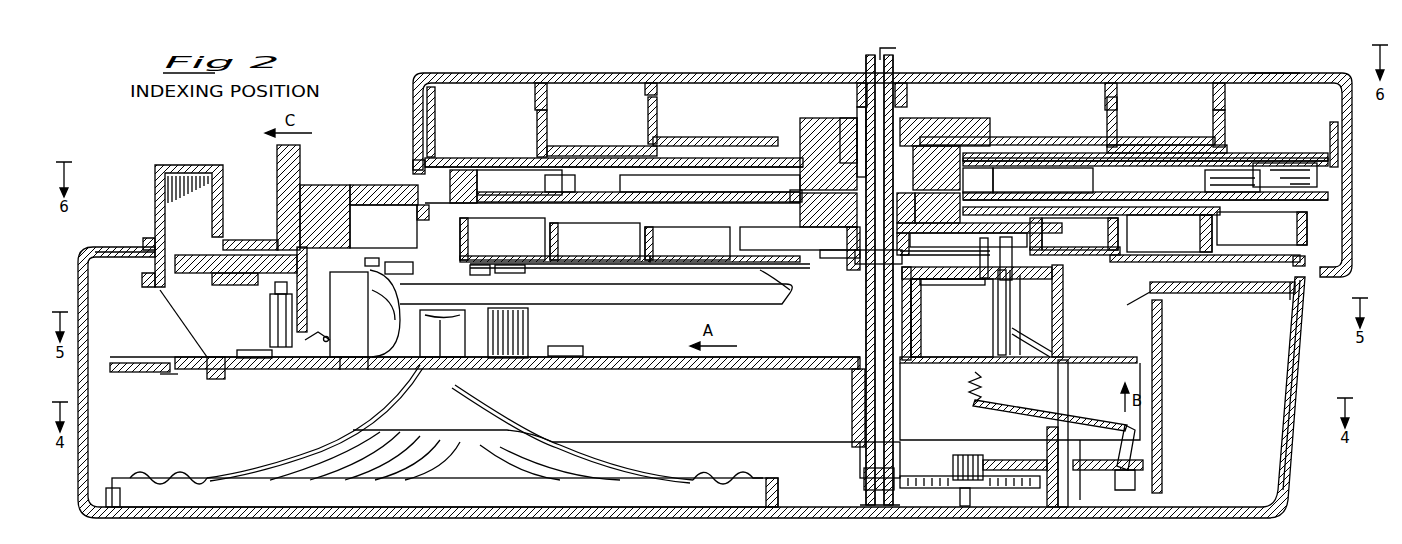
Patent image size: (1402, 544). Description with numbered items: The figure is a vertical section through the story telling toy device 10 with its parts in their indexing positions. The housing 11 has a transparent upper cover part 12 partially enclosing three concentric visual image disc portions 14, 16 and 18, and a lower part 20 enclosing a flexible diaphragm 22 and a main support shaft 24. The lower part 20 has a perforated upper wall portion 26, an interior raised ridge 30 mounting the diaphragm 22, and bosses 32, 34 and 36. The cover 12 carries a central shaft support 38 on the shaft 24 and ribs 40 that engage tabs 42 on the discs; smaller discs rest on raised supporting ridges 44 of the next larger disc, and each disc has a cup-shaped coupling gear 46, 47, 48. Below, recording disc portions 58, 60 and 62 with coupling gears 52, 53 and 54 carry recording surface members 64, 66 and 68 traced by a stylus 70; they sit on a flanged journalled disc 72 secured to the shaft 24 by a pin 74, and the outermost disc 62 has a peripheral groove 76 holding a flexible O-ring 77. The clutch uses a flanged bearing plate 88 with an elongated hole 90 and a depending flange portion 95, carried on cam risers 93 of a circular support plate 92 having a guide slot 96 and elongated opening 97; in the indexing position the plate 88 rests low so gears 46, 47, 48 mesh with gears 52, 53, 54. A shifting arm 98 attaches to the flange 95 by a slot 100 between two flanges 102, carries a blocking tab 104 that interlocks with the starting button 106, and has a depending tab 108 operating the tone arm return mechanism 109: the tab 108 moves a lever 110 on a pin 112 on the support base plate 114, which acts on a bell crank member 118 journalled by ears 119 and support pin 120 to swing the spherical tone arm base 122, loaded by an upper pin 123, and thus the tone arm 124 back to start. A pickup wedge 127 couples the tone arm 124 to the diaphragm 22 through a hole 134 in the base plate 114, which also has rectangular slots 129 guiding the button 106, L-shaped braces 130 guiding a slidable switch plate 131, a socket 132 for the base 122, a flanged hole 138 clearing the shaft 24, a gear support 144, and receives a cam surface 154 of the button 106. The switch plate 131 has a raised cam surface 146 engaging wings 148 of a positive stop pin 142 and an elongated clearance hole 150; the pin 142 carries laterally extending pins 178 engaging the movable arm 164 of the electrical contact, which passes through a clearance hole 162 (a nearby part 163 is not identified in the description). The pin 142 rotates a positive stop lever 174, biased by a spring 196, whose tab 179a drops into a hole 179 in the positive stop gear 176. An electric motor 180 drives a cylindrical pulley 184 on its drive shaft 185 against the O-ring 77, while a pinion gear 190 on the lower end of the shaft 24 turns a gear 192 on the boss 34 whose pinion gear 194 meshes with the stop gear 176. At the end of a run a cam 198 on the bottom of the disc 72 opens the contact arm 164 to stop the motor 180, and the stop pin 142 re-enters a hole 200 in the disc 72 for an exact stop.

The story telling toy device 10 is at (1254, 64).
The housing 11 is at (1308, 334).
The transparent upper cover part 12 is at (589, 73).
The visual image disc portion 14 is at (1018, 133).
The visual image disc portion 16 is at (1185, 147).
The visual image disc portion 18 is at (1275, 165).
The lower part 20 is at (330, 510).
The flexible diaphragm 22 is at (583, 462).
The main support shaft 24 is at (860, 452).
The perforated upper wall portion 26 is at (130, 247).
The interior raised ridge 30 is at (118, 506).
The interior shaft support or boss 32 is at (870, 505).
The boss 34 is at (975, 505).
The boss 36 is at (1050, 505).
The shaft support 38 is at (908, 93).
The ribs 40 is at (520, 97).
The tabs 42 is at (440, 128).
The raised supporting ridges 44 is at (540, 157).
The coupling gear 46 is at (862, 150).
The coupling gear 47 is at (840, 150).
The coupling gear 48 is at (818, 150).
The coupling gear 52 is at (842, 235).
The coupling gear 53 is at (815, 228).
The coupling gear 54 is at (800, 222).
The recording disc portion 58 is at (725, 242).
The recording disc portion 60 is at (632, 238).
The recording disc portion 62 is at (540, 232).
The recording surface member 64 is at (677, 262).
The recording surface member 66 is at (610, 270).
The recording surface member 68 is at (573, 268).
The stylus 70 is at (782, 278).
The flanged journalled disc 72 is at (838, 270).
The pin 74 is at (858, 275).
The peripheral groove 76 is at (1300, 260).
The flexible O-ring 77 is at (1285, 292).
The bearing plate 88 is at (1153, 165).
The elongated hole 90 is at (740, 178).
The support plate 92 is at (652, 190).
The cam risers 93 is at (505, 189).
The depending flange portion 95 is at (1205, 184).
The guide slot 96 is at (555, 186).
The elongated opening 97 is at (790, 197).
The shifting arm 98 is at (290, 203).
The slot 100 is at (456, 205).
The flanges 102 is at (416, 170).
The blocking tab 104 is at (202, 256).
The starting button 106 is at (195, 165).
The tab 108 is at (298, 252).
The tone arm return mechanism 109 is at (395, 258).
The lever 110 is at (270, 320).
The pin 112 is at (273, 290).
The support base plate 114 is at (262, 375).
The bell crank member 118 is at (310, 345).
The supporting ears 119 is at (348, 370).
The support pin 120 is at (325, 352).
The spherical tone arm base 122 is at (405, 290).
The upper pin 123 is at (380, 262).
The tone arm 124 is at (762, 300).
The pickup wedge 127 is at (433, 370).
The rectangular slots 129 is at (165, 375).
The L-shaped braces 130 is at (245, 362).
The switch plate 131 is at (637, 357).
The socket 132 is at (337, 336).
The hole 134 is at (493, 360).
The flanged hole 138 is at (864, 397).
The positive stop pin 142 is at (1064, 323).
The gear support 144 is at (1080, 376).
The raised cam surface 146 is at (1050, 342).
The wings 148 is at (986, 418).
The elongated clearance hole 150 is at (858, 352).
The cam surface 154 is at (175, 324).
The clearance hole 162 is at (986, 283).
The tab 163 is at (960, 283).
The movable arm 164 is at (992, 300).
The positive stop lever 174 is at (1130, 420).
The positive stop gear 176 is at (1090, 478).
The laterally extending pins 178 is at (1005, 320).
The hole 179 is at (1127, 462).
The tab 179a is at (1135, 437).
The electric motor 180 is at (539, 370).
The cylindrical pulley 184 is at (518, 272).
The motor drive shaft 185 is at (480, 275).
The pinion gear 190 is at (856, 490).
The gear 192 is at (916, 490).
The pinion gear 194 is at (952, 466).
The spring 196 is at (965, 385).
The cam 198 is at (985, 225).
The hole 200 is at (1035, 225).